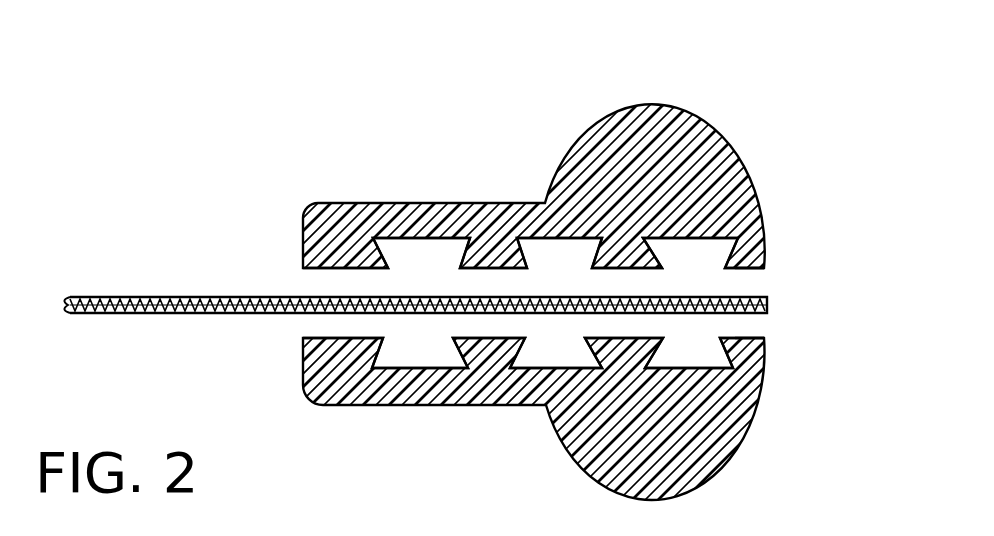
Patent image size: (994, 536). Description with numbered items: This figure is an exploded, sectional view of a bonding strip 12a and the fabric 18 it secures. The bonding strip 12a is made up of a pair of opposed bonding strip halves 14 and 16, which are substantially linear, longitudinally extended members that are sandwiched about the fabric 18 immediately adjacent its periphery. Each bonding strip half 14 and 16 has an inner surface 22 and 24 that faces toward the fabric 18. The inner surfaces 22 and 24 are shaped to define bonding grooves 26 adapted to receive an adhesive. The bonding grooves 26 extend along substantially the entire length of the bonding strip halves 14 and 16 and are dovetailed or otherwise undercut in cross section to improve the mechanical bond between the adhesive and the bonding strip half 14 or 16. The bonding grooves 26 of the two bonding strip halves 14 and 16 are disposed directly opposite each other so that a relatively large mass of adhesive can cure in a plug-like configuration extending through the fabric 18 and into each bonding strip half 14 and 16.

The bonding strip 12a is at (360, 122).
The bonding strip half 14 is at (727, 135).
The bonding strip half 16 is at (745, 452).
The fabric 18 is at (153, 297).
The inner surface 22 is at (752, 266).
The inner surface 24 is at (753, 337).
The bonding grooves 26 is at (540, 237).